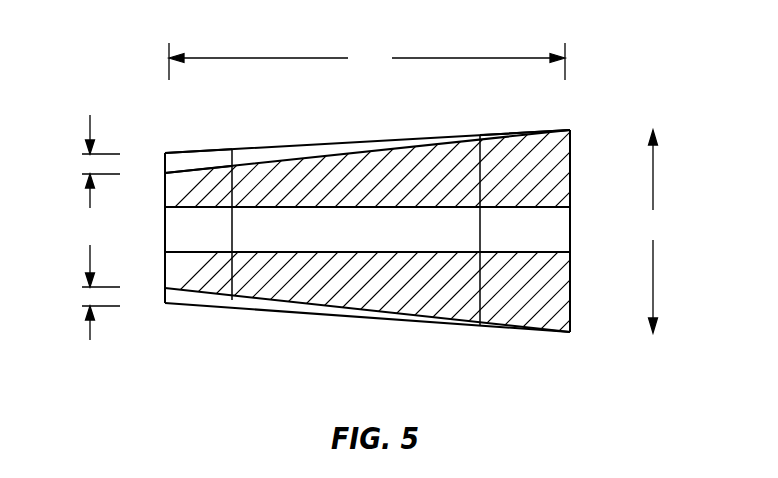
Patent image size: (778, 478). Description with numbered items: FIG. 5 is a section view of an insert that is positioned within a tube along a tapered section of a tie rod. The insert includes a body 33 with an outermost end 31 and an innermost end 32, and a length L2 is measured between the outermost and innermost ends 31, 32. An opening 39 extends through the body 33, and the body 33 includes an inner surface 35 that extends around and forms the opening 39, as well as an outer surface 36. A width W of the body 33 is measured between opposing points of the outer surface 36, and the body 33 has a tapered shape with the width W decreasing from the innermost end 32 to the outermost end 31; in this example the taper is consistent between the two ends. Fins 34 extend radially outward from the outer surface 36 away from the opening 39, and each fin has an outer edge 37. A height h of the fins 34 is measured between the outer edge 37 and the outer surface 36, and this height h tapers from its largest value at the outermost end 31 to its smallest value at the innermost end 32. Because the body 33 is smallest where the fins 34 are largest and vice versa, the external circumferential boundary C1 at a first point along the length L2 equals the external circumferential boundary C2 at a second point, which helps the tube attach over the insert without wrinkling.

The outermost end 31 is at (164, 192).
The innermost end 32 is at (570, 150).
The body 33 is at (558, 130).
The fins 34 is at (267, 148).
The inner surface 35 is at (198, 252).
The outer surface 36 is at (467, 139).
The outer edge 37 is at (218, 150).
The opening 39 is at (545, 236).
The external circumferential boundary C1 is at (475, 316).
The external circumferential boundary C2 is at (232, 288).
The length L2 is at (367, 61).
The width W is at (653, 231).
The height h is at (93, 227).